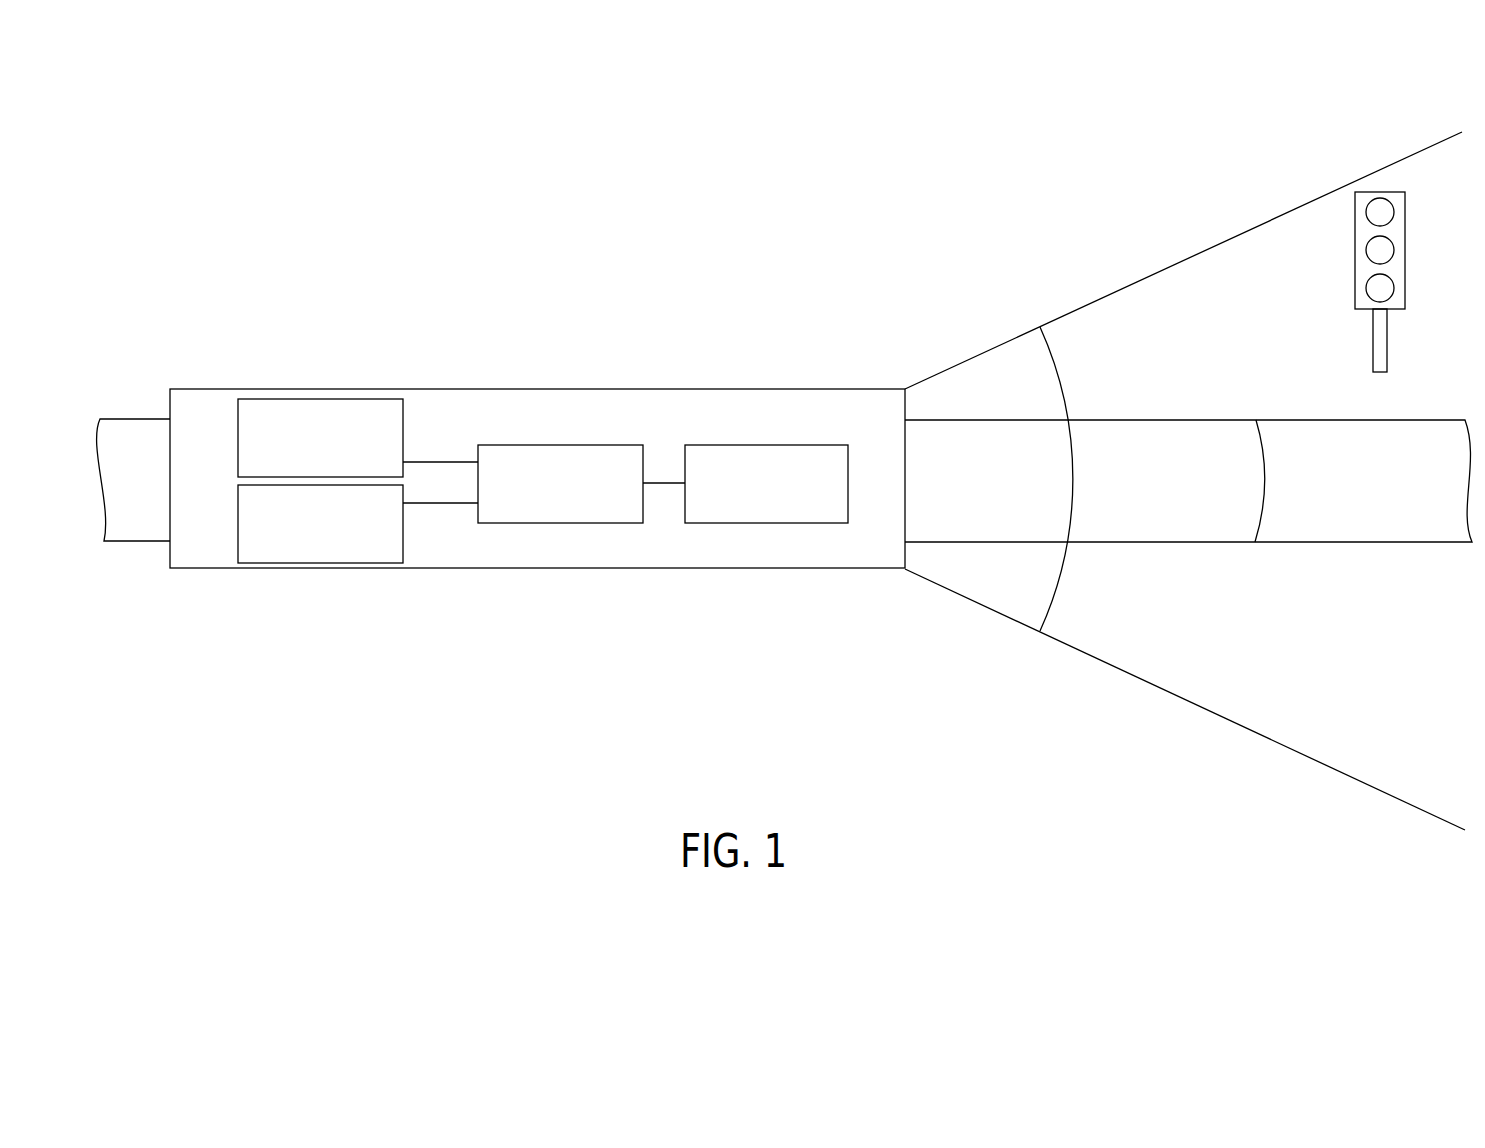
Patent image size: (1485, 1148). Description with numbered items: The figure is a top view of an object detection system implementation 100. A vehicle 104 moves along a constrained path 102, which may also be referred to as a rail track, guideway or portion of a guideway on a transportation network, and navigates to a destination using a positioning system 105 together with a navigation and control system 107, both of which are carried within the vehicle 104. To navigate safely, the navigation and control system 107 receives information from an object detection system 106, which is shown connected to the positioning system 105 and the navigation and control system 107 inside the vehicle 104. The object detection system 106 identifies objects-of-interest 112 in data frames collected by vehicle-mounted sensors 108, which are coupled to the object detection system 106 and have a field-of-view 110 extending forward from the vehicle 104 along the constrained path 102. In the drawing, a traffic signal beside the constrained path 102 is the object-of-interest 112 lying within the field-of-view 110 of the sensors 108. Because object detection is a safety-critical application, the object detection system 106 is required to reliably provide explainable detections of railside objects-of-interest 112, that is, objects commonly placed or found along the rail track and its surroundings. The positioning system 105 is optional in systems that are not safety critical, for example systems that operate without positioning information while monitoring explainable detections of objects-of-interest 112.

The object detection system implementation 100 is at (897, 690).
The constrained path 102 is at (1268, 476).
The vehicle 104 is at (833, 388).
The positioning system 105 is at (378, 565).
The object detection system 106 is at (578, 443).
The navigation and control system 107 is at (388, 397).
The vehicle-mounted sensors 108 is at (742, 443).
The field-of-view 110 is at (1060, 374).
The object-of-interest 112 is at (1353, 273).